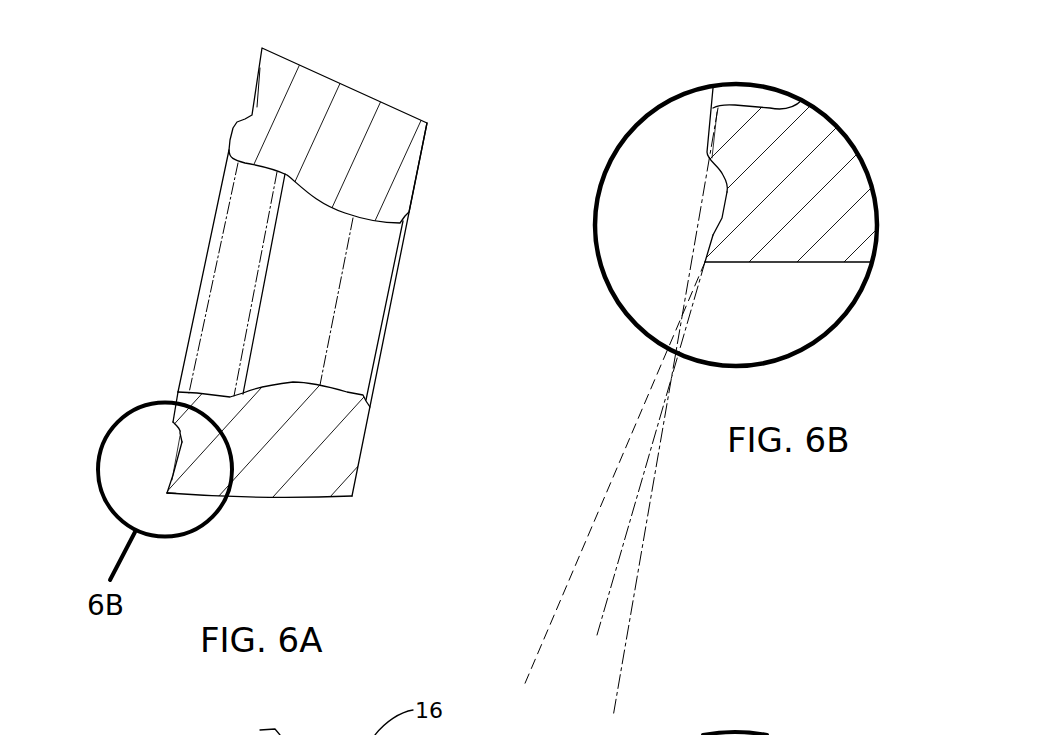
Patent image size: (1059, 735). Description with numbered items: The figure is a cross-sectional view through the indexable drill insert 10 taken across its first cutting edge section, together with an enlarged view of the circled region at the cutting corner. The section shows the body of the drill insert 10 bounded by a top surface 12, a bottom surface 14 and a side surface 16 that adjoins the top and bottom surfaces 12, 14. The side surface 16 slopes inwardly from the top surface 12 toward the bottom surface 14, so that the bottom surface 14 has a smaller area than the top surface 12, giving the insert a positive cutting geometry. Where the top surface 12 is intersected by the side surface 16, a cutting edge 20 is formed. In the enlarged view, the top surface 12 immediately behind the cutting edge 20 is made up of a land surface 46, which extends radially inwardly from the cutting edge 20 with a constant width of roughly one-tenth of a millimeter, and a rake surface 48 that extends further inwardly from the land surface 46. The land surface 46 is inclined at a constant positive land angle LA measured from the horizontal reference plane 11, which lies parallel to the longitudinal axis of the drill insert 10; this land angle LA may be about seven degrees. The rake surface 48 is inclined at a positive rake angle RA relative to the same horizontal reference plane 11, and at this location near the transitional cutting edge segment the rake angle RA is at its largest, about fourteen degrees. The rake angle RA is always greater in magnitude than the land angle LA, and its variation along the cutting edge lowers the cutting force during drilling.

In FIG. 6A, the indexable drill insert 10 is at (153, 120).
In FIG. 6B, the horizontal reference plane 11 is at (640, 560).
In FIG. 6A, the top surface 12 is at (165, 395).
In FIG. 6A, the bottom surface 14 is at (378, 455).
In FIG. 6A, the side surface 16 is at (367, 78).
In FIG. 6A, the cutting edge 20 is at (167, 502).
In FIG. 6B, the cutting edge 20 is at (707, 268).
In FIG. 6A, the land surface 46 is at (168, 492).
In FIG. 6B, the land surface 46 is at (703, 258).
In FIG. 6A, the rake surface 48 is at (173, 458).
In FIG. 6B, the rake surface 48 is at (713, 232).
In FIG. 6B, the land angle LA is at (690, 627).
In FIG. 6B, the rake angle RA is at (617, 675).